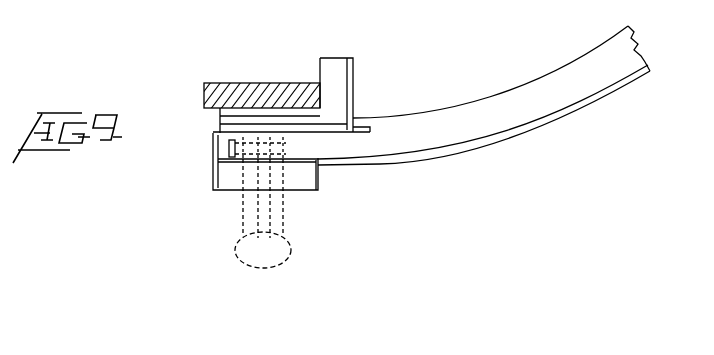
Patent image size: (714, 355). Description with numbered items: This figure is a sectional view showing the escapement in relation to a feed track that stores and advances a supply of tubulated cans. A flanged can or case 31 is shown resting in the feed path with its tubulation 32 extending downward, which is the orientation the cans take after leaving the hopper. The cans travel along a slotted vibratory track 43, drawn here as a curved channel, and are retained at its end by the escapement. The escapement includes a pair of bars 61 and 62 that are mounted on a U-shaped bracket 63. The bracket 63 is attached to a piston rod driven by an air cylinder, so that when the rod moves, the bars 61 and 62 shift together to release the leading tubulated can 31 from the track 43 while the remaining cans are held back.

The flanged can 31 is at (298, 141).
The tubulation 32 is at (263, 217).
The slotted vibratory track 43 is at (517, 93).
The bar 61 is at (212, 147).
The bar 62 is at (217, 134).
The U-shaped bracket 63 is at (262, 92).